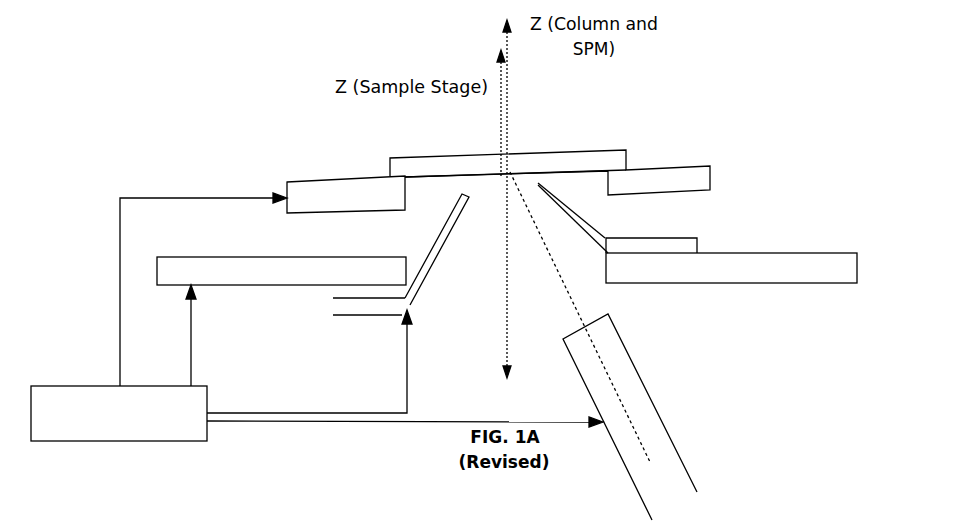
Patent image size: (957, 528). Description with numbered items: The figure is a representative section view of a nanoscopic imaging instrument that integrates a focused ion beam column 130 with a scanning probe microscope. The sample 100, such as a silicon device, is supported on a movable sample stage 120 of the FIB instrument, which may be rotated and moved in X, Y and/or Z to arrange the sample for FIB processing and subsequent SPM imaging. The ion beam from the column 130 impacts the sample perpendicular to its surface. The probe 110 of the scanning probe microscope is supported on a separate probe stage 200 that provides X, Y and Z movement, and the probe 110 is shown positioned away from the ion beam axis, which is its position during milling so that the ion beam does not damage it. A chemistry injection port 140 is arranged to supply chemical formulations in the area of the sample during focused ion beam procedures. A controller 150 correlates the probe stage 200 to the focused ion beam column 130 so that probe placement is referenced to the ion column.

The sample 100 is at (562, 160).
The probe 110 is at (685, 245).
The sample stage 120 is at (352, 183).
The focused ion beam column 130 is at (648, 405).
The chemistry injection port 140 is at (378, 305).
The controller 150 is at (197, 427).
The probe stage 200 is at (772, 257).